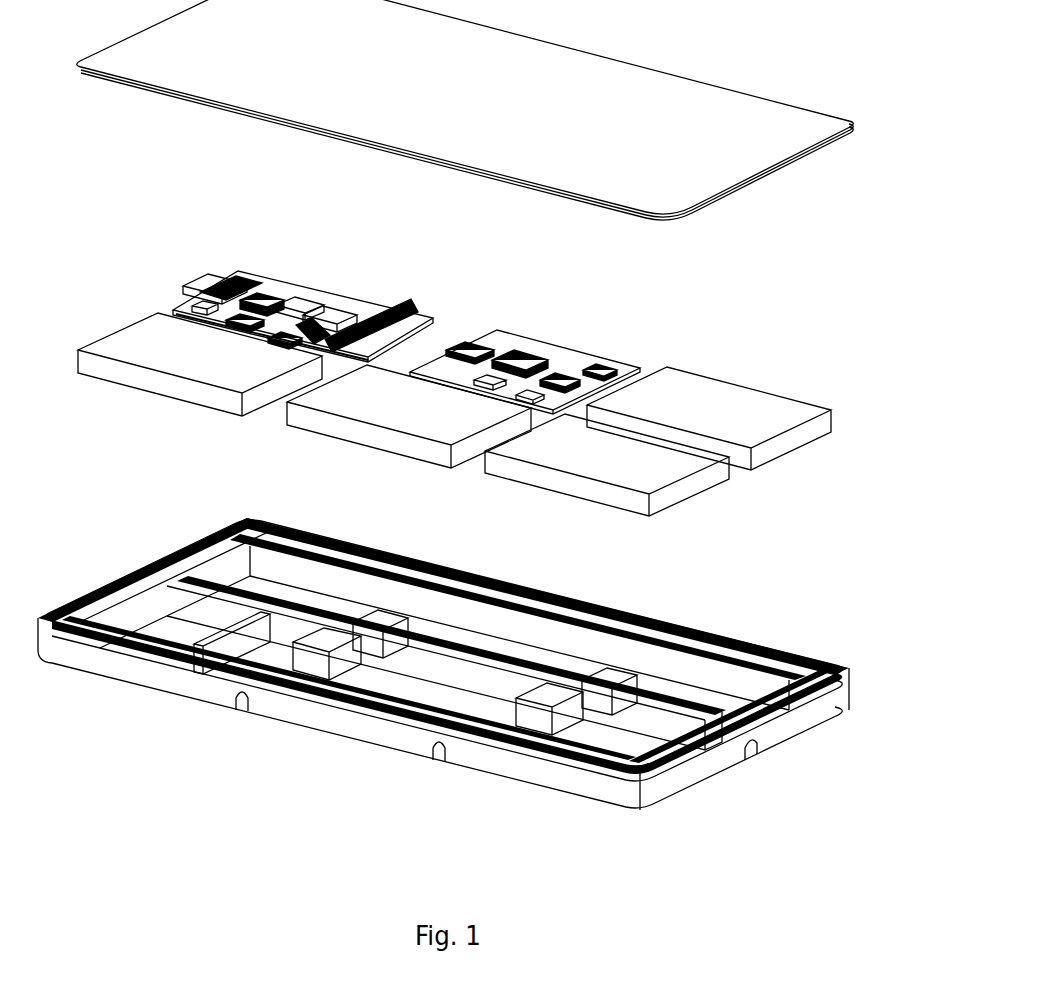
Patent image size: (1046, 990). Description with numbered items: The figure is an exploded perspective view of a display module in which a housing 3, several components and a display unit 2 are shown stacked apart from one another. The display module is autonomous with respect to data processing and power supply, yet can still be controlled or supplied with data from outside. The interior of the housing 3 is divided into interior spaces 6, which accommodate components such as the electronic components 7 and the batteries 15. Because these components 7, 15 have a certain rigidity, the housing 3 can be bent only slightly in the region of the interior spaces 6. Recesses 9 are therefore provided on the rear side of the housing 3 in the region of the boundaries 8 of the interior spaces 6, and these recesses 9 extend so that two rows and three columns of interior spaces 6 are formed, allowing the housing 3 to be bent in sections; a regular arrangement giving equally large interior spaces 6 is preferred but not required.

The display unit 2 is at (590, 90).
The housing 3 is at (680, 775).
The interior spaces 6 is at (177, 635).
The electronic components 7 is at (298, 288).
The boundaries 8 is at (242, 622).
The recesses 9 is at (240, 700).
The batteries 15 is at (202, 362).